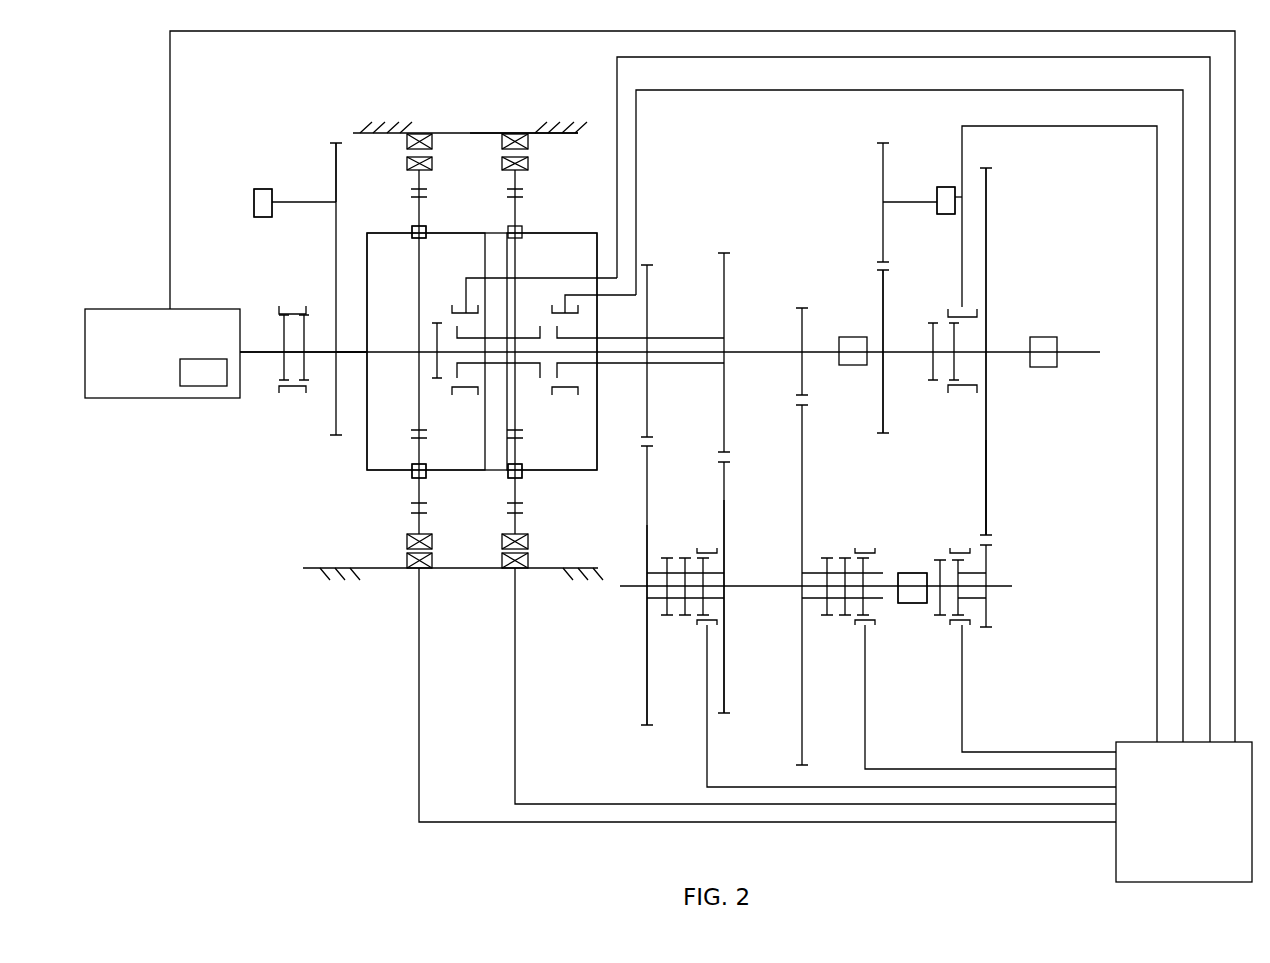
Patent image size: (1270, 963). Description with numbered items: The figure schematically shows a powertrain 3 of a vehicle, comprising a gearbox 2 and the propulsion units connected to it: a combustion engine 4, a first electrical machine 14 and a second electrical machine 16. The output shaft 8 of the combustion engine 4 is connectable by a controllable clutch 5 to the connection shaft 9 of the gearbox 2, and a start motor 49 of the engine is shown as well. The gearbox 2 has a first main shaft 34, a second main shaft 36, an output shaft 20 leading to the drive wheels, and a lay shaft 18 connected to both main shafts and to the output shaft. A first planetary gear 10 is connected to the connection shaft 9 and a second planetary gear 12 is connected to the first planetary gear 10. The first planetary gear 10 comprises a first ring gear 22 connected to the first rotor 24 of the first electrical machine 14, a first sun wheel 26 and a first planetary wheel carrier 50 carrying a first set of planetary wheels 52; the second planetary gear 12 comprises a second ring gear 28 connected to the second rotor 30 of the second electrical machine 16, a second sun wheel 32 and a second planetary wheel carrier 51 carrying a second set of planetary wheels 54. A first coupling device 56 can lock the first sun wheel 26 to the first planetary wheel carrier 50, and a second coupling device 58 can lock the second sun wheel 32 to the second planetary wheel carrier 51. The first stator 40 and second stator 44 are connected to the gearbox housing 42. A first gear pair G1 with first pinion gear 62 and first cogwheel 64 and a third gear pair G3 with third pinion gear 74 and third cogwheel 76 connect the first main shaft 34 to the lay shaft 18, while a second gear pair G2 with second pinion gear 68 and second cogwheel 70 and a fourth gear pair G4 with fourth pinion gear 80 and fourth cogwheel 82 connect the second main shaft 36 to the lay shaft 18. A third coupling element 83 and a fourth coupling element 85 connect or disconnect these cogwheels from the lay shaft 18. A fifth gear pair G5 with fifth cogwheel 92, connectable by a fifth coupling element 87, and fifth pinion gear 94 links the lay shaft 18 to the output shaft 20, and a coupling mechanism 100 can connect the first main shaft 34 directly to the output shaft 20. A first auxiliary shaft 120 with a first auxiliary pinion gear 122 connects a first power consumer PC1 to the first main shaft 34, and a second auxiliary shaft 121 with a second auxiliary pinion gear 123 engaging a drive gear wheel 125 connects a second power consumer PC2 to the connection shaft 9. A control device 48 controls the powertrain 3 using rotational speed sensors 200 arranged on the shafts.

The gearbox 2 is at (198, 694).
The powertrain 3 is at (350, 780).
The combustion engine 4 is at (165, 365).
The controllable clutch 5 is at (283, 340).
The output shaft of the combustion engine 8 is at (265, 353).
The connection shaft 9 is at (353, 355).
The first planetary gear 10 is at (331, 472).
The second planetary gear 12 is at (616, 230).
The first electrical machine 14 is at (394, 585).
The second electrical machine 16 is at (535, 588).
The lay shaft 18 is at (782, 588).
The output shaft of the gearbox 20 is at (1015, 352).
The first ring gear 22 is at (418, 191).
The first rotor 24 is at (433, 168).
The first sun wheel 26 is at (415, 378).
The second ring gear 28 is at (522, 193).
The second rotor 30 is at (503, 134).
The second sun wheel 32 is at (565, 310).
The first main shaft 34 is at (755, 352).
The second main shaft 36 is at (627, 368).
The first stator 40 is at (403, 150).
The gearbox housing 42 is at (498, 152).
The second stator 44 is at (528, 150).
The control device 48 is at (1200, 834).
The start motor 49 is at (208, 387).
The first planetary wheel carrier 50 is at (462, 471).
The second planetary wheel carrier 51 is at (563, 471).
The first set of planetary wheels 52 is at (421, 257).
The second set of planetary wheels 54 is at (518, 266).
The first coupling device 56 is at (466, 396).
The second coupling device 58 is at (566, 396).
The first pinion gear 62 is at (884, 385).
The first cogwheel 64 is at (913, 572).
The second pinion gear 68 is at (727, 395).
The second cogwheel 70 is at (726, 497).
The third pinion gear 74 is at (803, 388).
The third cogwheel 76 is at (805, 462).
The fourth pinion gear 80 is at (648, 392).
The fourth cogwheel 82 is at (648, 525).
The third coupling element 83 is at (862, 553).
The fourth coupling element 85 is at (705, 553).
The fifth coupling element 87 is at (958, 551).
The fifth cogwheel 92 is at (988, 550).
The fifth pinion gear 94 is at (987, 452).
The coupling mechanism 100 is at (962, 395).
The first auxiliary shaft 120 is at (937, 200).
The second auxiliary shaft 121 is at (296, 203).
The first auxiliary pinion gear 122 is at (878, 148).
The second auxiliary pinion gear 123 is at (335, 147).
The drive gear wheel 125 is at (334, 292).
The rotational speed sensors 200 is at (855, 337).
The first gear pair G1 is at (917, 339).
The second gear pair G2 is at (750, 249).
The third gear pair G3 is at (825, 269).
The fourth gear pair G4 is at (676, 296).
The fifth gear pair G5 is at (1013, 438).
The first power consumer PC1 is at (965, 190).
The second power consumer PC2 is at (266, 188).